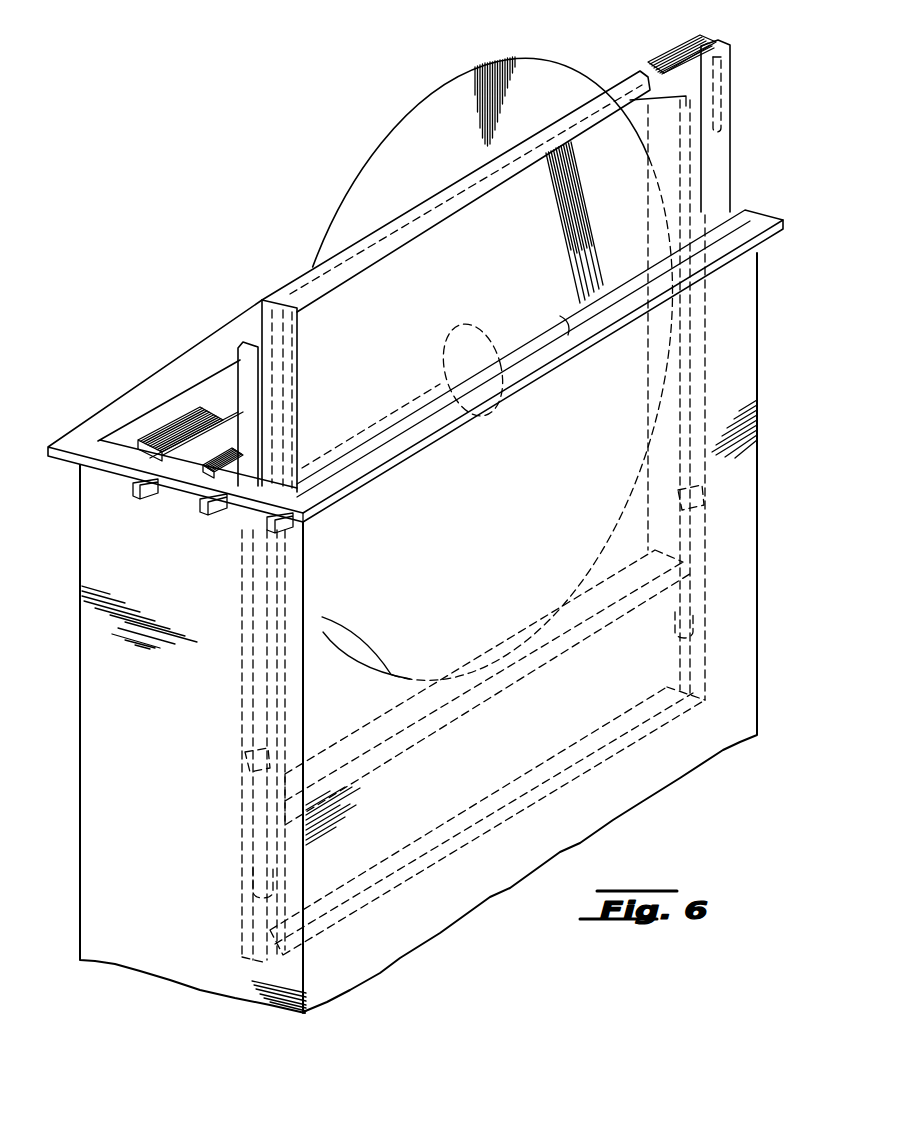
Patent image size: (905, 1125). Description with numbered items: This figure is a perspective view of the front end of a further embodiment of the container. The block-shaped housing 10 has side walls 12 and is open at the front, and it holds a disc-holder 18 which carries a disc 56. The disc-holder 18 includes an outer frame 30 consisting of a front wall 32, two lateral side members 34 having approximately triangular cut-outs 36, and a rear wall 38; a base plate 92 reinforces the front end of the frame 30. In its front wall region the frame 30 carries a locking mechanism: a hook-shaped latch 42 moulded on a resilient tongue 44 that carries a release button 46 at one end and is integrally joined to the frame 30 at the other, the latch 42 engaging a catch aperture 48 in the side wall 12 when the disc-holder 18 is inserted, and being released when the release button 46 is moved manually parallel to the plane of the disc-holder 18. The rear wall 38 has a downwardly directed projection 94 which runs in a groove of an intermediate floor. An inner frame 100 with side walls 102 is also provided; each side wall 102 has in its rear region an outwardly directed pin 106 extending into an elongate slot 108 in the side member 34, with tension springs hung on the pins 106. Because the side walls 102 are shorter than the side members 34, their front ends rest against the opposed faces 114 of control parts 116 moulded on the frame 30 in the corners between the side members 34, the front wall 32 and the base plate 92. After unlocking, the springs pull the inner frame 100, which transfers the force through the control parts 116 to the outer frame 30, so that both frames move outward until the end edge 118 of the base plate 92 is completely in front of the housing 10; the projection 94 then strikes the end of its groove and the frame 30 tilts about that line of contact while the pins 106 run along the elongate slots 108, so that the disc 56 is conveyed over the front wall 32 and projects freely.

The housing 10 is at (98, 553).
The side wall 12 is at (757, 381).
The disc-holder 18 is at (624, 80).
The frame 30 is at (718, 166).
The front wall 32 is at (452, 193).
The lateral side member 34 is at (188, 348).
The triangular cut-out 36 is at (285, 667).
The rear wall 38 is at (405, 868).
The hook-shaped latch 42 is at (722, 64).
The resilient tongue 44 is at (716, 106).
The release button 46 is at (668, 53).
The catch aperture 48 is at (215, 514).
The disc 56 is at (447, 97).
The base plate 92 is at (412, 262).
The projection 94 is at (500, 830).
The inner frame 100 is at (268, 380).
The side wall 102 is at (650, 164).
The pin 106 is at (250, 752).
The elongate slot 108 is at (257, 863).
The opposed face 114 is at (326, 513).
The control part 116 is at (302, 356).
The end edge 118 is at (563, 323).